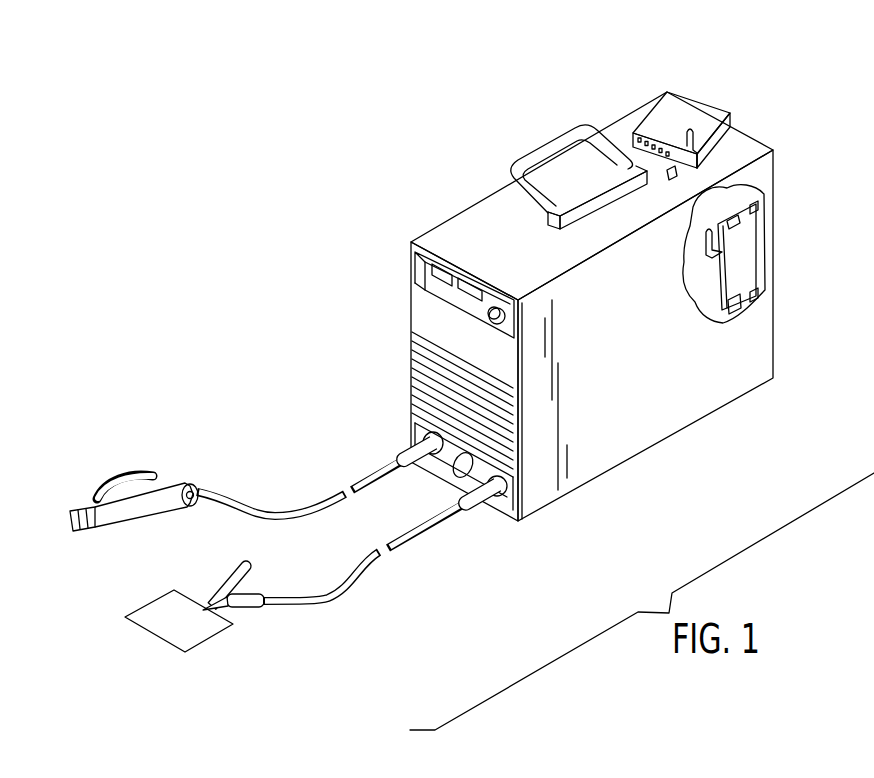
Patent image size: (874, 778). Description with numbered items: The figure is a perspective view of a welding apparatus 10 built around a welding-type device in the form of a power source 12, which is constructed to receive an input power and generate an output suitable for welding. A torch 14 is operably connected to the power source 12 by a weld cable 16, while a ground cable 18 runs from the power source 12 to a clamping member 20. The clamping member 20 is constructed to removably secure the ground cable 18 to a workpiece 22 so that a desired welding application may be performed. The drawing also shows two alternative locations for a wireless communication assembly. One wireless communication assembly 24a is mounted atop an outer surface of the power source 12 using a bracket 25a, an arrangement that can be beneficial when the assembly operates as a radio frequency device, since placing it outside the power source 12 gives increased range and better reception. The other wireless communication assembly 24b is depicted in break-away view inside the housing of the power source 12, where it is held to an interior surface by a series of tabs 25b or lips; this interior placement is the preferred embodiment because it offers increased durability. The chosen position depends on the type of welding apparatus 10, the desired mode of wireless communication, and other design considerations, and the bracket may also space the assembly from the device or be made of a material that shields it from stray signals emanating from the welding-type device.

The welding apparatus 10 is at (369, 141).
The power source 12 is at (653, 343).
The torch 14 is at (171, 490).
The weld cable 16 is at (255, 511).
The ground cable 18 is at (340, 593).
The clamping member 20 is at (240, 575).
The workpiece 22 is at (160, 631).
The wireless communication assembly 24a is at (723, 94).
The bracket 25a is at (724, 138).
The wireless communication assembly 24b is at (770, 246).
The tabs 25b is at (756, 302).